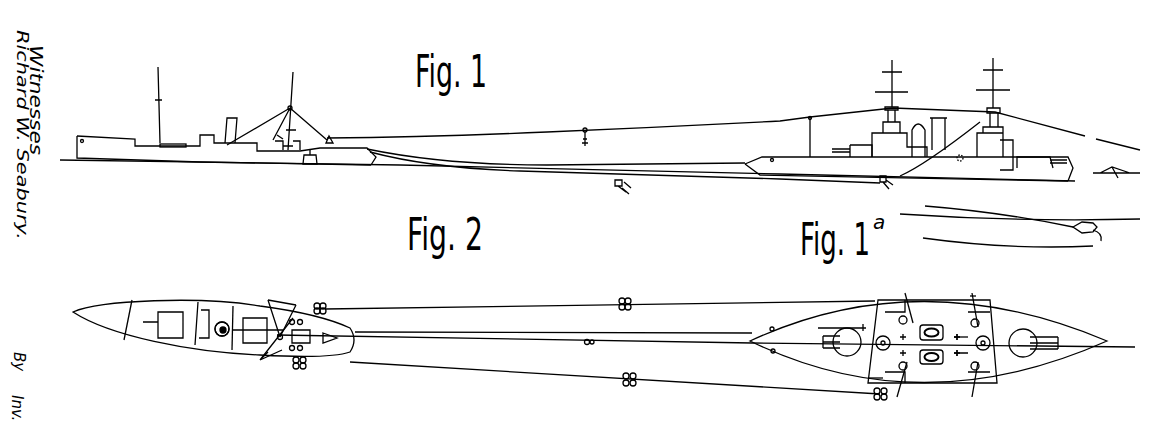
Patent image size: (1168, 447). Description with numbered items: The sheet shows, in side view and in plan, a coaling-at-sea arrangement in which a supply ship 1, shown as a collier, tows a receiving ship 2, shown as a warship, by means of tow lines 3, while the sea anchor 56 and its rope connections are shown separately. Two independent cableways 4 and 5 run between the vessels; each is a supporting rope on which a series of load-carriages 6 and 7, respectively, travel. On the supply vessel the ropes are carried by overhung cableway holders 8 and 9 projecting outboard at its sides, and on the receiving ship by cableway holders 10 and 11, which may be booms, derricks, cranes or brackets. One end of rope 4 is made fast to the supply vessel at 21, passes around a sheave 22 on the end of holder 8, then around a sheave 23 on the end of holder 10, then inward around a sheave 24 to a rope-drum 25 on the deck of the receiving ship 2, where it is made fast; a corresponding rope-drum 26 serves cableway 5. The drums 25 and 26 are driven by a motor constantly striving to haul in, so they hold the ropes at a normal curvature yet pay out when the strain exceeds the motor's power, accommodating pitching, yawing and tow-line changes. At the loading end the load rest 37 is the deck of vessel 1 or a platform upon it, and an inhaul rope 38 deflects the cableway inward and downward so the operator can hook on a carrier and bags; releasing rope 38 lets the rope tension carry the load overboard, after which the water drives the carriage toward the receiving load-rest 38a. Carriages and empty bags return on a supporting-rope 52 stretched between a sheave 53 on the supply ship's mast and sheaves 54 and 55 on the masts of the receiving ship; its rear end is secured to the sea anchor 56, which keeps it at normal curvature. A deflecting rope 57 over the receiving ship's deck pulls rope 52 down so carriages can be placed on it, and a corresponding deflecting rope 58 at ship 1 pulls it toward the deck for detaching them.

In FIG. 1, the supply ship 1 is at (97, 147).
In FIG. 2, the supply ship 1 is at (93, 312).
In FIG. 1, the consuming or receiving ship 2 is at (909, 144).
In FIG. 2, the consuming or receiving ship 2 is at (1062, 332).
In FIG. 1, the tow lines 3 is at (510, 165).
In FIG. 2, the tow lines 3 is at (437, 332).
In FIG. 2, the cableway 4 is at (508, 306).
In FIG. 1, the cableway 5 is at (727, 178).
In FIG. 2, the cableway 5 is at (568, 376).
In FIG. 2, the load-carriages 6 is at (620, 304).
In FIG. 1, the load-carriages 7 is at (310, 150).
In FIG. 2, the load-carriages 7 is at (299, 370).
In FIG. 2, the overhung cableway holder 8 is at (274, 313).
In FIG. 1, the overhung cableway holder 9 is at (280, 137).
In FIG. 2, the overhung cableway holder 9 is at (281, 356).
In FIG. 2, the cableway holder 10 is at (975, 299).
In FIG. 1, the cableway holder 11 is at (980, 122).
In FIG. 2, the cableway holder 11 is at (973, 393).
In FIG. 2, the fastening point 21 is at (225, 316).
In FIG. 2, the sheave 22 is at (277, 322).
In FIG. 1, the sheave 23 is at (993, 123).
In FIG. 2, the sheave 23 is at (968, 298).
In FIG. 1, the sheave 24 is at (979, 161).
In FIG. 2, the sheave 24 is at (968, 337).
In FIG. 2, the rope-drum 25 is at (956, 333).
In FIG. 2, the rope-drum 26 is at (960, 360).
In FIG. 2, the load rest 37 is at (308, 353).
In FIG. 2, the inhaul rope 38 is at (296, 313).
In FIG. 2, the receiving load-rest 38a is at (883, 378).
In FIG. 1, the supporting-rope 52 is at (701, 125).
In FIG. 1A, the supporting-rope 52 is at (1017, 223).
In FIG. 2, the supporting-rope 52 is at (674, 344).
In FIG. 1, the sheave 53 is at (292, 109).
In FIG. 1, the sheave 54 is at (885, 110).
In FIG. 1, the sheave 55 is at (997, 113).
In FIG. 1A, the sea anchor 56 is at (1099, 241).
In FIG. 1, the deflecting rope 57 is at (809, 141).
In FIG. 2, the deflecting rope 57 is at (838, 322).
In FIG. 1, the deflecting rope 58 is at (334, 141).